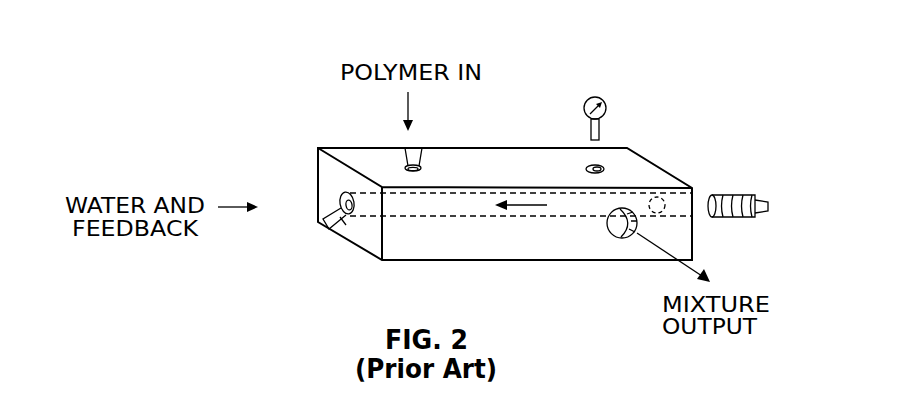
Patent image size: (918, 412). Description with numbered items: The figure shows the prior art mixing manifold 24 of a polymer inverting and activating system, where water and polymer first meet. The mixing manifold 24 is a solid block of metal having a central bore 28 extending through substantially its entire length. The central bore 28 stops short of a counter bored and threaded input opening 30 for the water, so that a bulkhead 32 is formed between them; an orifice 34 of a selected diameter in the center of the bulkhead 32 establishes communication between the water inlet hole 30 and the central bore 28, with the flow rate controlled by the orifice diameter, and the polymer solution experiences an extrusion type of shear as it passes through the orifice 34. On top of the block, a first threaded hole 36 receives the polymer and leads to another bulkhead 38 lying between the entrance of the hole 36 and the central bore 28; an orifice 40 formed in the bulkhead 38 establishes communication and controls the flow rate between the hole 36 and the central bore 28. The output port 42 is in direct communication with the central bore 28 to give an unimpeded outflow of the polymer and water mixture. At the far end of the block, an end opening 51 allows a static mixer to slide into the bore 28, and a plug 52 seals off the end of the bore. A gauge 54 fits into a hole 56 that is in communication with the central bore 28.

The mixing manifold 24 is at (294, 60).
The central bore 28 is at (443, 218).
The input opening 30 is at (322, 223).
The bulkhead 32 is at (340, 198).
The orifice 34 is at (341, 228).
The first threaded hole 36 is at (421, 158).
The bulkhead 38 is at (406, 158).
The orifice 40 is at (430, 171).
The output port 42 is at (616, 238).
The end opening 51 is at (666, 210).
The plug 52 is at (724, 196).
The gauge 54 is at (607, 110).
The hole 56 is at (588, 166).